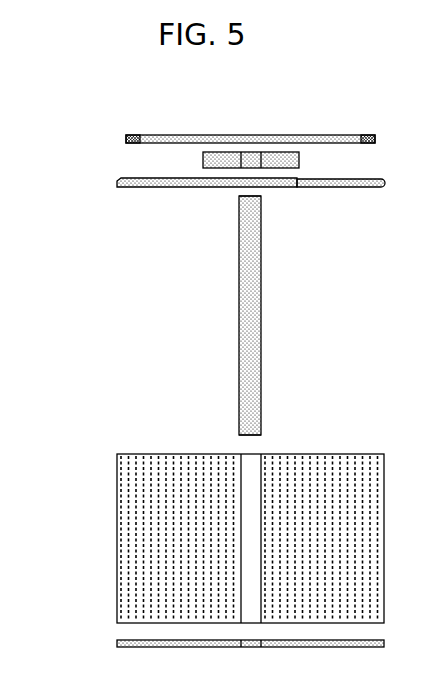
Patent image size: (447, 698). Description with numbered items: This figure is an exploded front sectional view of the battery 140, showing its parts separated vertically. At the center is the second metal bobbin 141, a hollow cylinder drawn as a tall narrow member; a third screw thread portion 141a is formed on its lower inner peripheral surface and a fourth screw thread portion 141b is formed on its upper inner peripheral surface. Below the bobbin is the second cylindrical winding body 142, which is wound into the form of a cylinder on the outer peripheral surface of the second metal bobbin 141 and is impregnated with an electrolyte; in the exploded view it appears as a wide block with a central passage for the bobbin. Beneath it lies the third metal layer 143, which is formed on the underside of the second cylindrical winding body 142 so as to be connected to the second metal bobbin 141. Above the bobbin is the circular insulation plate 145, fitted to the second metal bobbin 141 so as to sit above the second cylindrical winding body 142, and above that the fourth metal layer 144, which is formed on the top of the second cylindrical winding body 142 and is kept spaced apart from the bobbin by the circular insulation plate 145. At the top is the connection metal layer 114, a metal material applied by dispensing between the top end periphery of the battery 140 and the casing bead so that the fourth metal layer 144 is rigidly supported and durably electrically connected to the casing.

The connection metal layer 114 is at (126, 137).
The circular insulation plate 145 is at (214, 162).
The fourth metal layer 144 is at (144, 183).
The second metal bobbin 141 is at (239, 323).
The third screw thread portion 141a is at (248, 415).
The fourth screw thread portion 141b is at (248, 210).
The battery 140 is at (205, 538).
The second cylindrical winding body 142 is at (128, 556).
The third metal layer 143 is at (116, 645).